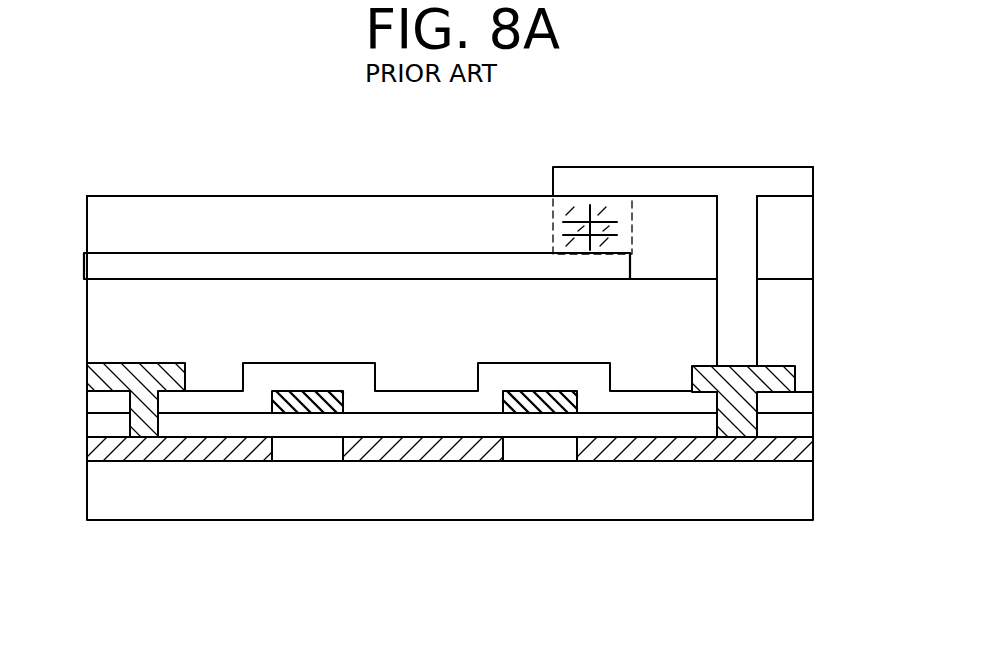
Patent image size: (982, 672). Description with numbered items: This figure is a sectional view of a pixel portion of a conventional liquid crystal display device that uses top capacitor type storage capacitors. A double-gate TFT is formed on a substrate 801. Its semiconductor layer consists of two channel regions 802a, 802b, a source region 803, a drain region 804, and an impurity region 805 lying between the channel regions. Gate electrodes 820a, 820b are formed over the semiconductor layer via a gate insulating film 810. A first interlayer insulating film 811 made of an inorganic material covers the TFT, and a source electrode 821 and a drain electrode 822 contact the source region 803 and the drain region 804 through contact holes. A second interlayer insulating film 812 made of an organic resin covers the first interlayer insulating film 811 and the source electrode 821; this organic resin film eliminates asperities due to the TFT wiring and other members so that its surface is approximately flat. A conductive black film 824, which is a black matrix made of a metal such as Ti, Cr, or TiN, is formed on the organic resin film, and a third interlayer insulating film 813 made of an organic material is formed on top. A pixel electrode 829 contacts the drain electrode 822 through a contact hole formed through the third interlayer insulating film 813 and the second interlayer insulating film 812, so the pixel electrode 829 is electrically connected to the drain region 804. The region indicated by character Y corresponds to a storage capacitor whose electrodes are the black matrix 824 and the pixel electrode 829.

The substrate 801 is at (762, 500).
The channel region 802a is at (310, 448).
The channel region 802b is at (527, 450).
The source region 803 is at (157, 448).
The drain region 804 is at (660, 460).
The impurity region 805 is at (427, 452).
The gate insulating film 810 is at (373, 427).
The first interlayer insulating film 811 is at (347, 372).
The second interlayer insulating film 812 is at (178, 305).
The third interlayer insulating film 813 is at (425, 217).
The gate electrode 820a is at (293, 413).
The gate electrode 820b is at (563, 410).
The source electrode 821 is at (124, 374).
The drain electrode 822 is at (760, 378).
The conductive black film 824 is at (252, 270).
The pixel electrode 829 is at (733, 185).
The storage capacitor region Y is at (608, 226).